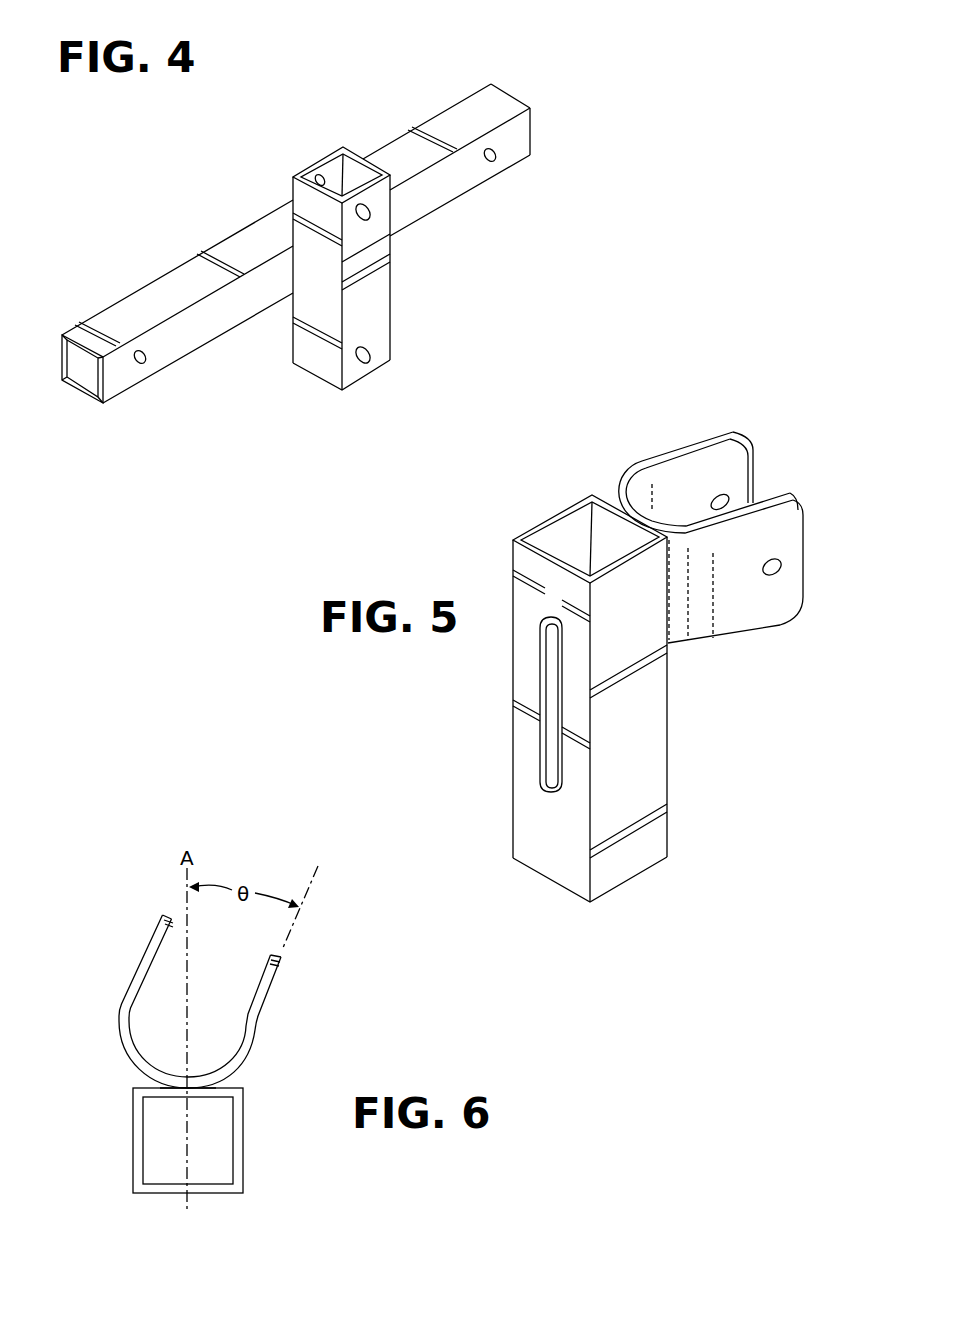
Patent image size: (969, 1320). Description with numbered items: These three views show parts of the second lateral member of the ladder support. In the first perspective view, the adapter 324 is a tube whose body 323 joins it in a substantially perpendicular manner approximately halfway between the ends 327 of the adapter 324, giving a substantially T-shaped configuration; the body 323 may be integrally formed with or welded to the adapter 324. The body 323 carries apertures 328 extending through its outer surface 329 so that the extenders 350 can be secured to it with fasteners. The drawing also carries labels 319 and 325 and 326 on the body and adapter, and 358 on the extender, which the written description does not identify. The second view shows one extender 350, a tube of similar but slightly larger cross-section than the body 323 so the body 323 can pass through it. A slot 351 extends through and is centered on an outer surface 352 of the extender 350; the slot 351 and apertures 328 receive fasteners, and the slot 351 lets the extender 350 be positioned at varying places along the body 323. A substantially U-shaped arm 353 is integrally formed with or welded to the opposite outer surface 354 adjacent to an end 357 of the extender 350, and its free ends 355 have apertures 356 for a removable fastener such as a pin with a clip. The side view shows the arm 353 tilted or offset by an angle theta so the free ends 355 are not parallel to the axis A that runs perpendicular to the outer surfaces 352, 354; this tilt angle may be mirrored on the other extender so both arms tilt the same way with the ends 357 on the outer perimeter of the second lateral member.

In FIG. 4, the open end of cross member 319 is at (530, 126).
In FIG. 4, the body 323 is at (153, 291).
In FIG. 4, the adapter 324 is at (380, 243).
In FIG. 4, the hole in receiver tube 325 is at (370, 207).
In FIG. 4, the side wall of receiver tube 326 is at (380, 287).
In FIG. 4, the ends of the adapter 327 is at (330, 165).
In FIG. 4, the apertures 328 is at (146, 360).
In FIG. 4, the outer surface of the body 329 is at (182, 332).
In FIG. 5, the extender 350 is at (708, 760).
In FIG. 6, the extender 350 is at (268, 1078).
In FIG. 5, the slot 351 is at (540, 737).
In FIG. 5, the outer surface 352 is at (528, 613).
In FIG. 6, the outer surface 352 is at (163, 1195).
In FIG. 5, the arm 353 is at (688, 448).
In FIG. 6, the arm 353 is at (143, 973).
In FIG. 6, the outer surface 354 is at (145, 1085).
In FIG. 5, the free ends 355 is at (753, 488).
In FIG. 5, the apertures 356 is at (726, 496).
In FIG. 5, the end of the extender 357 is at (562, 518).
In FIG. 5, the bottom end of tube 358 is at (618, 888).